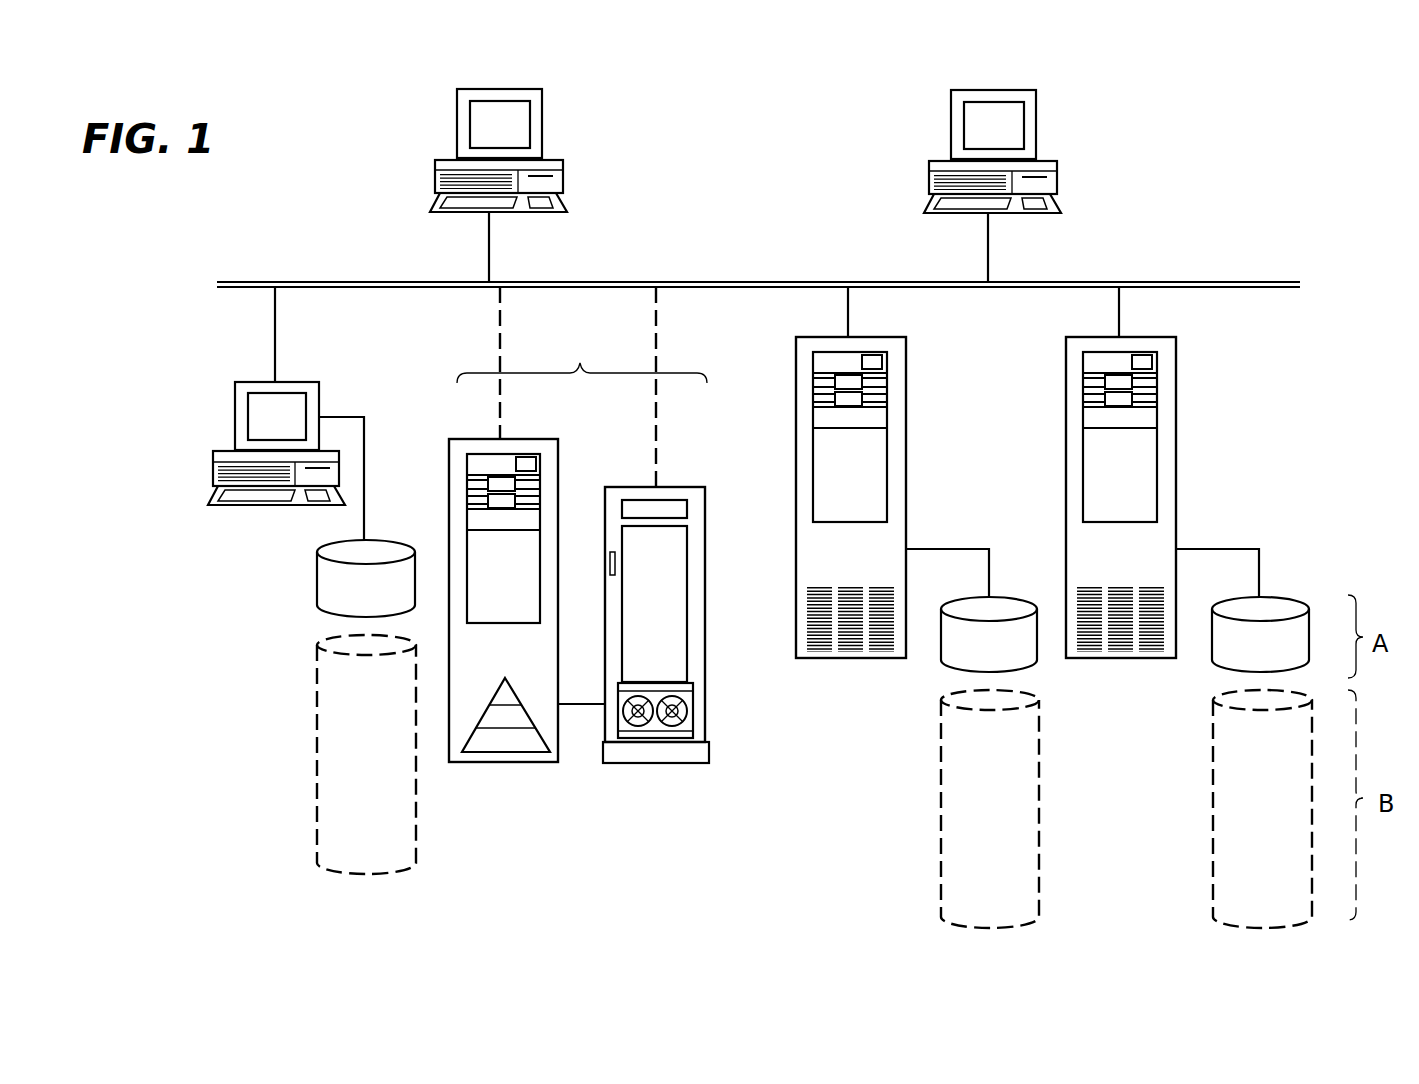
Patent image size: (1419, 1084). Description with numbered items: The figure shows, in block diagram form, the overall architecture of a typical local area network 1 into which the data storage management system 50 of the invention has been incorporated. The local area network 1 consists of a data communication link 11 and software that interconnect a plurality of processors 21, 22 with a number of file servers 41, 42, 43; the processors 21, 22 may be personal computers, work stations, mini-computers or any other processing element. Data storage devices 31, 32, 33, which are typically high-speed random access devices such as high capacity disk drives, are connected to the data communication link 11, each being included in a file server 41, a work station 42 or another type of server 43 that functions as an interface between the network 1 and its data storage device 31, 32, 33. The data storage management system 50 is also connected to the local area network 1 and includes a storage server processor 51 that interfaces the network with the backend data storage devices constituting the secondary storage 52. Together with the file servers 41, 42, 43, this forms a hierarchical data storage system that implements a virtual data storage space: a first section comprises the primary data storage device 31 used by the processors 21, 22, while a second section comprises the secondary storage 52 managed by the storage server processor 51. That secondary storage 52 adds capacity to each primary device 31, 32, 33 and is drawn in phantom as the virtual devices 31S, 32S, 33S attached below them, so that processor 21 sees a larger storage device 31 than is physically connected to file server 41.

The local area network 1 is at (1276, 175).
The data communication link 11 is at (1212, 282).
The processor 21 is at (567, 196).
The processor 22 is at (1057, 181).
The primary data storage device 31 is at (1007, 598).
The virtual device 31S is at (1039, 748).
The data storage device 32 is at (393, 541).
The virtual device 32S is at (318, 766).
The data storage device 33 is at (1290, 598).
The virtual device 33S is at (1213, 850).
The file server 41 is at (906, 357).
The work station 42 is at (319, 403).
The server 43 is at (1176, 363).
The data storage management system 50 is at (594, 549).
The storage server processor 51 is at (537, 439).
The secondary storage 52 is at (698, 487).